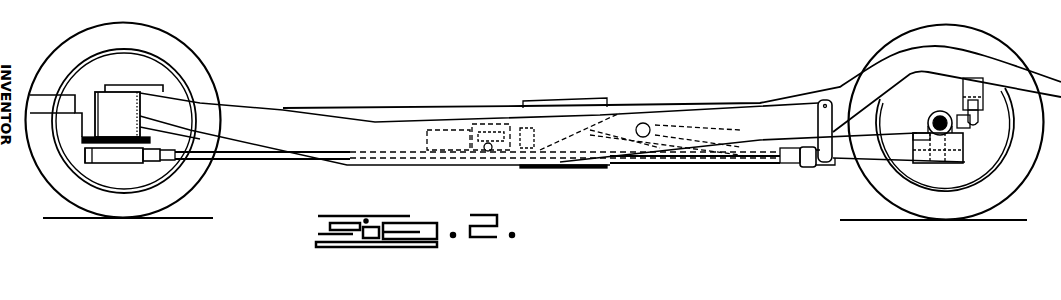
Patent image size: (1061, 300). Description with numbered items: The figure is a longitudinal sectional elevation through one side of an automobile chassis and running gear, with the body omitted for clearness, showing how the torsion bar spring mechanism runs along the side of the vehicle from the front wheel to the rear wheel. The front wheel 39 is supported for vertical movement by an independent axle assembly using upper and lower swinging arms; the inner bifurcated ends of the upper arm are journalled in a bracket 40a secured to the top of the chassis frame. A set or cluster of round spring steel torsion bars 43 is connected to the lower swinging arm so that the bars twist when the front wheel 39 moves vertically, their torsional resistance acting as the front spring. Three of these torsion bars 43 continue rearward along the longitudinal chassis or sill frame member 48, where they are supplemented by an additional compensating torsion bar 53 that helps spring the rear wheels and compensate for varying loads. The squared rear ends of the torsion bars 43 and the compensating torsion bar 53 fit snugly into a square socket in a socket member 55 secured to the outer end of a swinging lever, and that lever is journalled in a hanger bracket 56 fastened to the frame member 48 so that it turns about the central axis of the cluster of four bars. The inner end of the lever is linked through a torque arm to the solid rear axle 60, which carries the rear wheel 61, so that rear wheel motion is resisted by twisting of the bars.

The front wheel 39 is at (208, 82).
The bracket 40a is at (143, 84).
The longitudinal chassis frame member 48 is at (283, 107).
The torsion bars 43 is at (242, 156).
The compensating torsion bar 53 is at (620, 113).
The hanger bracket 56 is at (817, 105).
The socket member 55 is at (790, 165).
The rear axle 60 is at (927, 118).
The rear wheel 61 is at (977, 40).